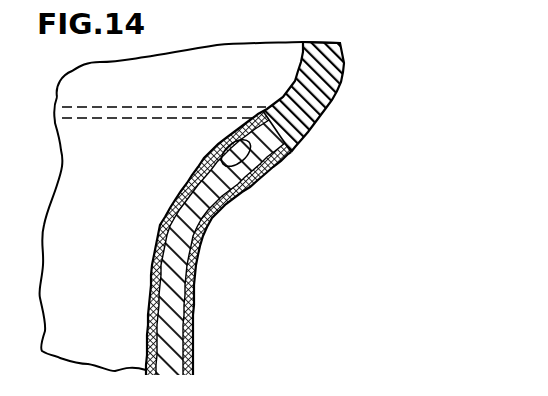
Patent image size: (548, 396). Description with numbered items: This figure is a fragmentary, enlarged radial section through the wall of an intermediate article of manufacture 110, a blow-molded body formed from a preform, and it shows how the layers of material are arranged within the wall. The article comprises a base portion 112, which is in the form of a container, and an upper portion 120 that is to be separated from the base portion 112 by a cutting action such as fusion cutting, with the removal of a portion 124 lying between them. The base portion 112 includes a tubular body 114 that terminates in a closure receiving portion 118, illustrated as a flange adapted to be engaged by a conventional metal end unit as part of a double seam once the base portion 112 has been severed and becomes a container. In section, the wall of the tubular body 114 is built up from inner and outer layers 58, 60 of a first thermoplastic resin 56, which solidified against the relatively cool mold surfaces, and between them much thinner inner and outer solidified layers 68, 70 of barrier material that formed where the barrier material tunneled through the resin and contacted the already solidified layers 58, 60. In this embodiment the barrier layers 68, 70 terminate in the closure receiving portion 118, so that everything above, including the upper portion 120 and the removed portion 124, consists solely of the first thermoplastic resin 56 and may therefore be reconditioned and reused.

The intermediate article of manufacture 110 is at (268, 55).
The upper portion 120 is at (343, 52).
The first thermoplastic resin 56 is at (344, 87).
The removed portion 124 is at (292, 160).
The closure receiving portion 118 is at (208, 147).
The inner layer of first thermoplastic resin 58 is at (160, 217).
The inner solidified layer of barrier material 68 is at (157, 248).
The outer layer of first thermoplastic resin 60 is at (211, 226).
The outer solidified layer of barrier material 70 is at (192, 268).
The tubular body 114 is at (146, 284).
The base portion 112 is at (256, 194).